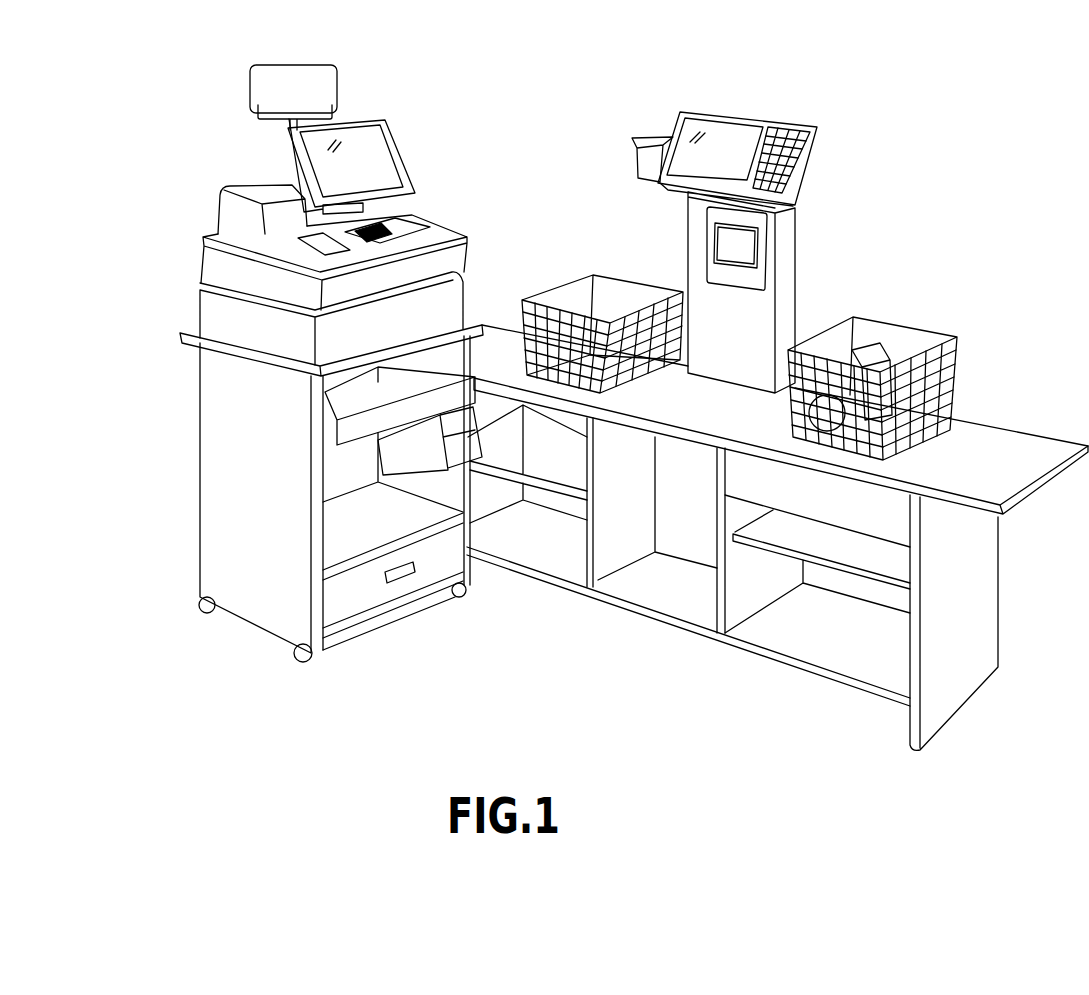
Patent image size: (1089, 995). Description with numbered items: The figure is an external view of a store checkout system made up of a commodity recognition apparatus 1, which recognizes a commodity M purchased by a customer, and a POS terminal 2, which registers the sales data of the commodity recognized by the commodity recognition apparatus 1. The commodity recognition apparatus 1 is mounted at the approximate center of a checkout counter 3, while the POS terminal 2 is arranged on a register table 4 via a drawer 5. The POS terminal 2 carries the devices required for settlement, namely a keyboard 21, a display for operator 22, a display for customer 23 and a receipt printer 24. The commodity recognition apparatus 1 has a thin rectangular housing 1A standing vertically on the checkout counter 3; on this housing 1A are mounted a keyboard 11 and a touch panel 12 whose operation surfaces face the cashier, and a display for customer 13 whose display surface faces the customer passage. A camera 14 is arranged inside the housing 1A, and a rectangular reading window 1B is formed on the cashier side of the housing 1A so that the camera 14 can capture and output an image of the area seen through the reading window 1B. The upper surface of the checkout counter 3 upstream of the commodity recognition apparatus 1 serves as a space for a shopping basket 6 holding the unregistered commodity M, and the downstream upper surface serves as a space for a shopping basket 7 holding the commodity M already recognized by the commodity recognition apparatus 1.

The commodity recognition apparatus 1 is at (732, 228).
The housing 1A is at (783, 303).
The reading window 1B is at (750, 248).
The POS terminal 2 is at (213, 212).
The checkout counter 3 is at (1032, 433).
The register table 4 is at (215, 447).
The drawer 5 is at (217, 307).
The shopping basket 6 is at (955, 370).
The shopping basket 7 is at (568, 283).
The keyboard 11 is at (785, 130).
The touch panel 12 is at (728, 138).
The display for customer 13 is at (643, 160).
The camera 14 is at (713, 217).
The keyboard 21 is at (422, 223).
The display for operator 22 is at (400, 147).
The display for customer 23 is at (337, 88).
The receipt printer 24 is at (257, 183).
The commodity M is at (877, 327).